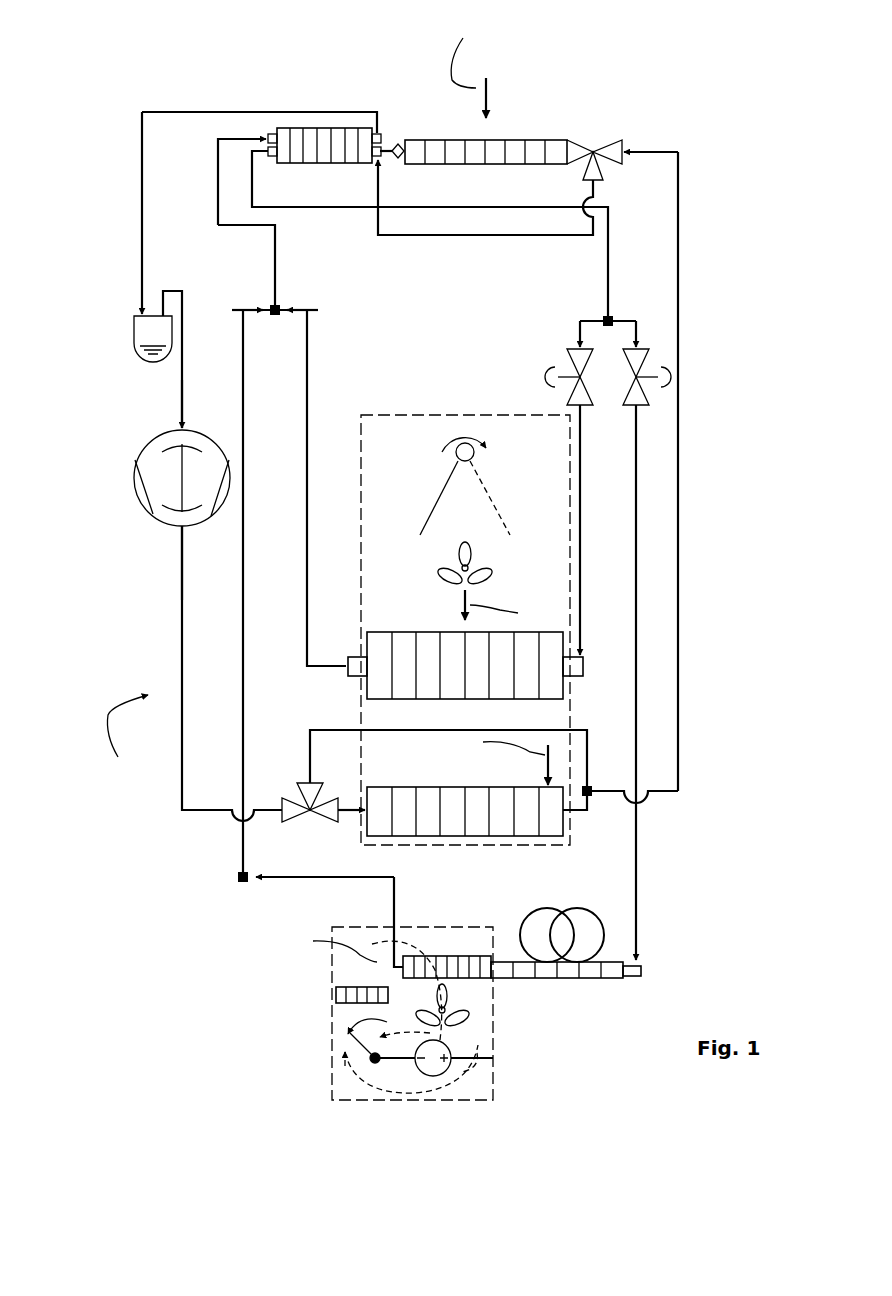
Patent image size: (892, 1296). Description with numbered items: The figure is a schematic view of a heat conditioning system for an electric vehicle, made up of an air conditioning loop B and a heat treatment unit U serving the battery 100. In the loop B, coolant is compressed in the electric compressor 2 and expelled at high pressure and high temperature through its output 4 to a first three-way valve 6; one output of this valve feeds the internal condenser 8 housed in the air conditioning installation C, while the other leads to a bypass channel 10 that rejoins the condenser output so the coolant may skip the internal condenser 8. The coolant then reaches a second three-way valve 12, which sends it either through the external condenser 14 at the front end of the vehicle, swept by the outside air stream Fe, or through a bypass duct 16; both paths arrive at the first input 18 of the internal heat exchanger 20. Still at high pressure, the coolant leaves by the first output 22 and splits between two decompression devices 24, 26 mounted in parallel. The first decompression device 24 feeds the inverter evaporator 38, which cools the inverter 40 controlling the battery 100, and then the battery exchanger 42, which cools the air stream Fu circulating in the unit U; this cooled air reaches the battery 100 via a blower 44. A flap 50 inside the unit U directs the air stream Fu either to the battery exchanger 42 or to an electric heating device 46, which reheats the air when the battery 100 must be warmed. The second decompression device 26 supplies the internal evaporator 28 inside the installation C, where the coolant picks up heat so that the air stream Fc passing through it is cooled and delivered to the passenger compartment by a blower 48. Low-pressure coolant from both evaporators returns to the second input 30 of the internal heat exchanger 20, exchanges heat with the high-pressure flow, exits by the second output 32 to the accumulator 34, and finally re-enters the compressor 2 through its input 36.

The electric compressor 2 is at (134, 478).
The output 4 is at (180, 528).
The first three-way valve 6 is at (300, 806).
The internal condenser 8 is at (453, 836).
The bypass channel 10 is at (343, 728).
The second three-way valve 12 is at (598, 142).
The external condenser 14 is at (553, 140).
The bypass duct 16 is at (461, 238).
The first input 18 is at (398, 145).
The internal heat exchanger 20 is at (310, 128).
The first output 22 is at (268, 158).
The first decompression device 24 is at (640, 355).
The second decompression device 26 is at (565, 355).
The internal evaporator 28 is at (383, 632).
The second input 30 is at (262, 128).
The second output 32 is at (377, 133).
The accumulator 34 is at (145, 328).
The input 36 is at (182, 428).
The inverter evaporator 38 is at (616, 980).
The inverter 40 is at (590, 910).
The battery exchanger 42 is at (472, 956).
The blower 44 is at (455, 1003).
The electric heating device 46 is at (353, 987).
The blower 48 is at (478, 562).
The flap 50 is at (345, 1050).
The battery 100 is at (470, 1048).
The air conditioning loop B is at (127, 739).
The air conditioning installation C is at (399, 413).
The heat treatment unit U is at (388, 1103).
The air stream from outside Fe is at (468, 63).
The air stream Fc is at (504, 687).
The air stream Fu is at (382, 1009).